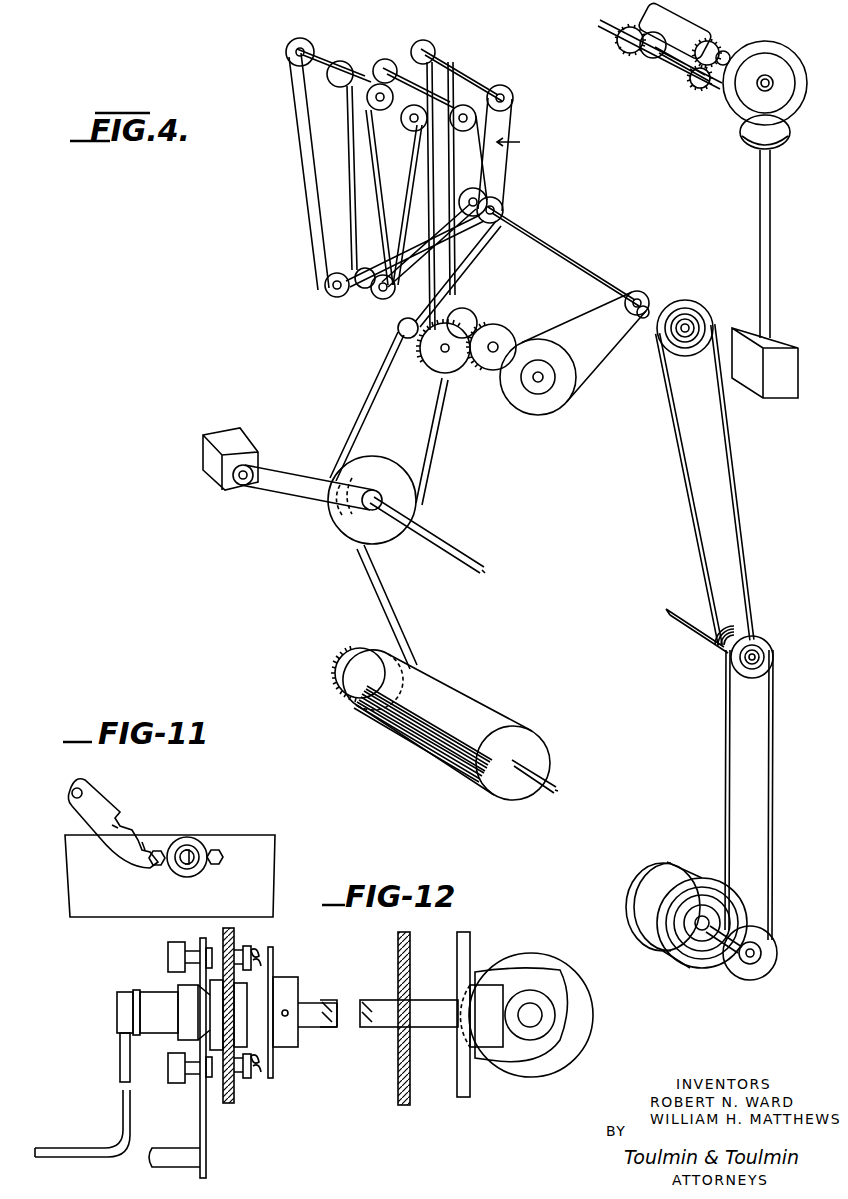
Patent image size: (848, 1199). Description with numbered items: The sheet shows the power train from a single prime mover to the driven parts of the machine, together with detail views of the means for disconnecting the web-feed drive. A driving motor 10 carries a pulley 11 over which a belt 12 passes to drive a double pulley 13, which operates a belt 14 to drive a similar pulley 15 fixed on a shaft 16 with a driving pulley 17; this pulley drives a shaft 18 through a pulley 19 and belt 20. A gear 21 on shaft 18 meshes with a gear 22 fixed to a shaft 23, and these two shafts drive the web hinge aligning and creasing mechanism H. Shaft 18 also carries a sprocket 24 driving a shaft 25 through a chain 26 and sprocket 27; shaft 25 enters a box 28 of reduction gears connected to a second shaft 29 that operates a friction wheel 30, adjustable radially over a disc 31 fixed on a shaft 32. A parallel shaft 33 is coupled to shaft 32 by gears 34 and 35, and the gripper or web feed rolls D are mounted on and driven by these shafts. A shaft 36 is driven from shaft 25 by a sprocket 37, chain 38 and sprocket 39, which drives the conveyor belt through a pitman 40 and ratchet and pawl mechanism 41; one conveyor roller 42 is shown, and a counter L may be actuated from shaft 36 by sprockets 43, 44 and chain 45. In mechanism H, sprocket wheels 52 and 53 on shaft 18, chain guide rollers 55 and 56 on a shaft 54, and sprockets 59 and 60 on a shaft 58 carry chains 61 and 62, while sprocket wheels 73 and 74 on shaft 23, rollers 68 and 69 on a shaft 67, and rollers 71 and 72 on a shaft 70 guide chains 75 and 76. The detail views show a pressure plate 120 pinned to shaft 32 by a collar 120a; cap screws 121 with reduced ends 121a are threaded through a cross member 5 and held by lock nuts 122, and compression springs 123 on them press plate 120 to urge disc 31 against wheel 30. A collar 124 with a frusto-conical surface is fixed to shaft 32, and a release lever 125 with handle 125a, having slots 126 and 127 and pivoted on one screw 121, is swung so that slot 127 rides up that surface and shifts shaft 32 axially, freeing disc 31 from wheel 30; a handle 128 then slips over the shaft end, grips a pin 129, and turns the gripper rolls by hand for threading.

In FIG. 11, the cross member 5 is at (112, 898).
In FIG. 12, the cross member 5 is at (230, 1106).
In FIG. 4, the driving motor 10 is at (640, 902).
In FIG. 4, the pulley 11 is at (736, 967).
In FIG. 4, the belt 12 is at (724, 770).
In FIG. 4, the double pulley 13 is at (770, 648).
In FIG. 4, the belt 14 is at (746, 526).
In FIG. 4, the pulley 15 is at (700, 312).
In FIG. 4, the shaft 16 is at (645, 336).
In FIG. 4, the driving pulley 17 is at (646, 300).
In FIG. 4, the shaft 18 is at (492, 360).
In FIG. 4, the pulley 19 is at (535, 400).
In FIG. 4, the belt 20 is at (588, 396).
In FIG. 4, the gear 21 is at (500, 338).
In FIG. 4, the gear 22 is at (436, 366).
In FIG. 4, the shaft 23 is at (375, 298).
In FIG. 4, the sprocket 24 is at (360, 268).
In FIG. 4, the shaft 25 is at (568, 252).
In FIG. 4, the chain 26 is at (488, 249).
In FIG. 4, the sprocket 27 is at (504, 212).
In FIG. 4, the box 28 is at (786, 386).
In FIG. 4, the shaft 29 is at (772, 280).
In FIG. 12, the shaft 29 is at (535, 1015).
In FIG. 4, the friction wheel 30 is at (756, 144).
In FIG. 12, the friction wheel 30 is at (570, 1052).
In FIG. 4, the disc 31 is at (798, 95).
In FIG. 12, the disc 31 is at (462, 1100).
In FIG. 4, the shaft 32 is at (731, 52).
In FIG. 11, the shaft 32 is at (195, 866).
In FIG. 12, the shaft 32 is at (438, 1030).
In FIG. 4, the shaft 33 is at (680, 70).
In FIG. 4, the gear 34 is at (713, 43).
In FIG. 4, the gear 35 is at (700, 90).
In FIG. 4, the shaft 36 is at (456, 552).
In FIG. 4, the sprocket 37 is at (473, 188).
In FIG. 4, the chain 38 is at (356, 413).
In FIG. 4, the sprocket 39 is at (415, 506).
In FIG. 4, the pitman 40 is at (410, 622).
In FIG. 4, the ratchet and pawl mechanism 41 is at (409, 673).
In FIG. 4, the roller 42 is at (490, 722).
In FIG. 4, the sprocket 43 is at (386, 542).
In FIG. 4, the sprocket 44 is at (240, 488).
In FIG. 4, the chain 45 is at (284, 505).
In FIG. 4, the sprocket wheel 52 is at (471, 318).
In FIG. 4, the sprocket wheel 53 is at (400, 336).
In FIG. 4, the shaft 54 is at (440, 106).
In FIG. 4, the chain guide roller 55 is at (470, 126).
In FIG. 4, the chain guide roller 56 is at (388, 59).
In FIG. 4, the shaft 58 is at (470, 80).
In FIG. 4, the sprocket 59 is at (514, 97).
In FIG. 4, the sprocket 60 is at (434, 46).
In FIG. 4, the chain 61 is at (504, 182).
In FIG. 4, the chain 62 is at (412, 184).
In FIG. 4, the shaft 67 is at (406, 117).
In FIG. 4, the chain guide roller 68 is at (412, 132).
In FIG. 4, the chain guide roller 69 is at (335, 65).
In FIG. 4, the shaft 70 is at (333, 78).
In FIG. 4, the chain guide roller 71 is at (369, 105).
In FIG. 4, the chain guide roller 72 is at (296, 54).
In FIG. 4, the sprocket wheel 73 is at (421, 351).
In FIG. 4, the sprocket wheel 74 is at (332, 296).
In FIG. 4, the chain 75 is at (381, 236).
In FIG. 4, the chain 76 is at (305, 166).
In FIG. 4, the web hinge aligning and creasing mechanism H is at (522, 144).
In FIG. 4, the gripper or web feed rolls D is at (630, 54).
In FIG. 4, the counter L is at (200, 452).
In FIG. 12, the pressure plate 120 is at (273, 1078).
In FIG. 12, the collar 120a is at (298, 990).
In FIG. 11, the cap screw 121 is at (157, 868).
In FIG. 12, the cap screw 121 is at (167, 956).
In FIG. 12, the reduced end 121a is at (264, 951).
In FIG. 12, the lock nut 122 is at (214, 946).
In FIG. 12, the compression spring 123 is at (257, 952).
In FIG. 12, the collar 124 is at (180, 1036).
In FIG. 11, the release lever 125 is at (80, 812).
In FIG. 12, the release lever 125 is at (200, 1130).
In FIG. 11, the handle 125a is at (77, 788).
In FIG. 12, the handle 125a is at (152, 1161).
In FIG. 11, the slot 126 is at (120, 823).
In FIG. 11, the slot 127 is at (150, 842).
In FIG. 12, the handle 128 is at (120, 1047).
In FIG. 11, the pin 129 is at (200, 846).
In FIG. 12, the pin 129 is at (170, 1006).